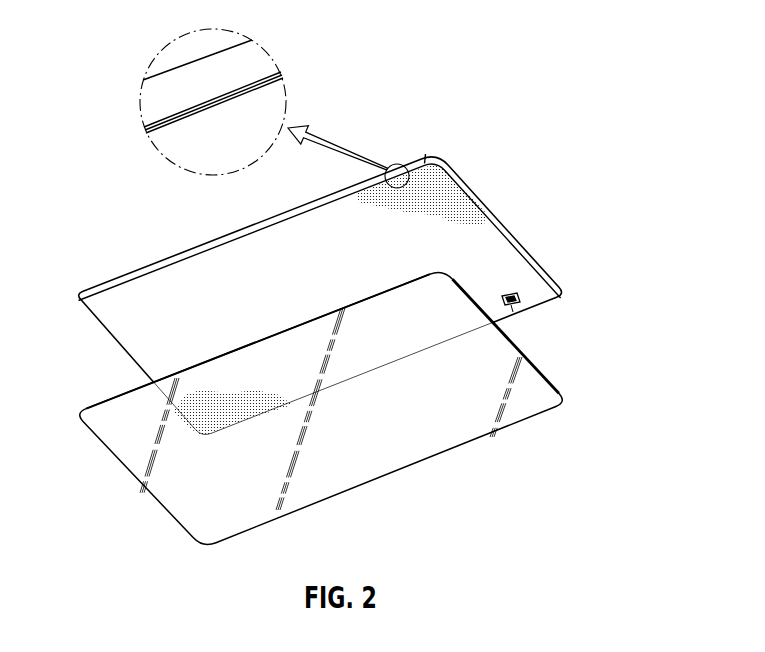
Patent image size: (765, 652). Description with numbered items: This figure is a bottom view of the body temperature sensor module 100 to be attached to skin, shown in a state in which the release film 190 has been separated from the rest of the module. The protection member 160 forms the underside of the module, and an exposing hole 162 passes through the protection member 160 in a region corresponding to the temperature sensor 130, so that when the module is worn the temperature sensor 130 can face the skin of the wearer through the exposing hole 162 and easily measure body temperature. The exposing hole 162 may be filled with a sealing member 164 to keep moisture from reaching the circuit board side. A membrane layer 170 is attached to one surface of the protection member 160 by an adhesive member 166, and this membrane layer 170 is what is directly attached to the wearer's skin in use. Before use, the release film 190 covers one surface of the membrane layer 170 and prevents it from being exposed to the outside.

The body temperature sensor module 100 is at (457, 73).
The temperature sensor 130 is at (510, 306).
The protection member 160 is at (523, 228).
The exposing hole 162 is at (521, 301).
The sealing member 164 is at (426, 158).
The adhesive member 166 is at (152, 127).
The membrane layer 170 is at (168, 130).
The release film 190 is at (507, 434).